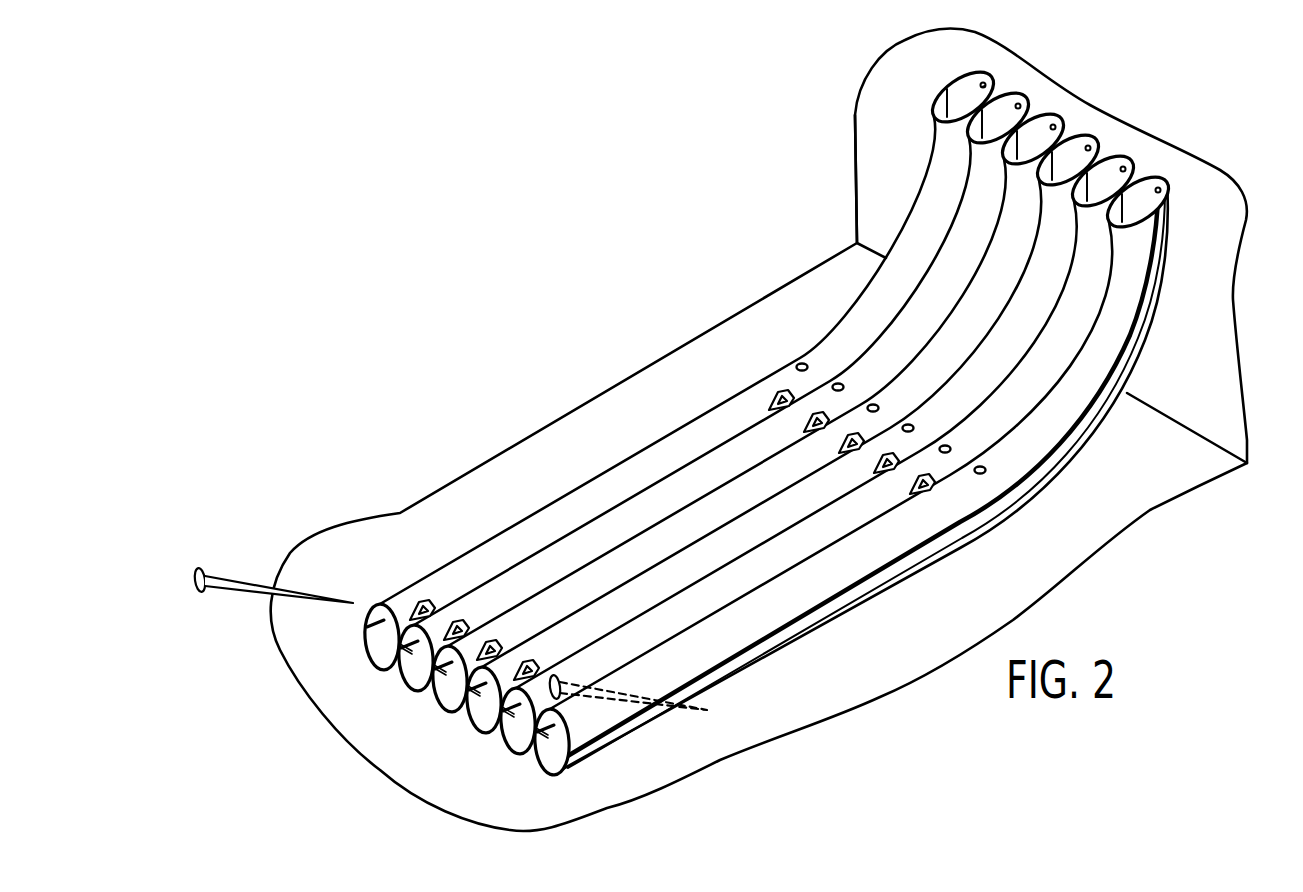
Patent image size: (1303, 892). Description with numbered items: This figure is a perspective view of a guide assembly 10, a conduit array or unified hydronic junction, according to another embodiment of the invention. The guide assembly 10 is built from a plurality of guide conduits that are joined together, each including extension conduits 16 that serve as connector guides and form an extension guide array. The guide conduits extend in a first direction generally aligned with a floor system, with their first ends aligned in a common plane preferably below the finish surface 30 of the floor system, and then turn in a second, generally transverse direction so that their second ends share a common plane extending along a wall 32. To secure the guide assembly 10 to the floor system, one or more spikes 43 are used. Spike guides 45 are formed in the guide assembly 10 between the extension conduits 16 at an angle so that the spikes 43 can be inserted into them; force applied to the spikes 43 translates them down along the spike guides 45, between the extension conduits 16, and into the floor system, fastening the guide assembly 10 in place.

The guide assembly 10 is at (522, 275).
The extension conduits 16 is at (871, 575).
The finish surface 30 is at (1145, 494).
The wall 32 is at (1205, 374).
The spikes 43 is at (230, 583).
The spike guides 45 is at (813, 413).